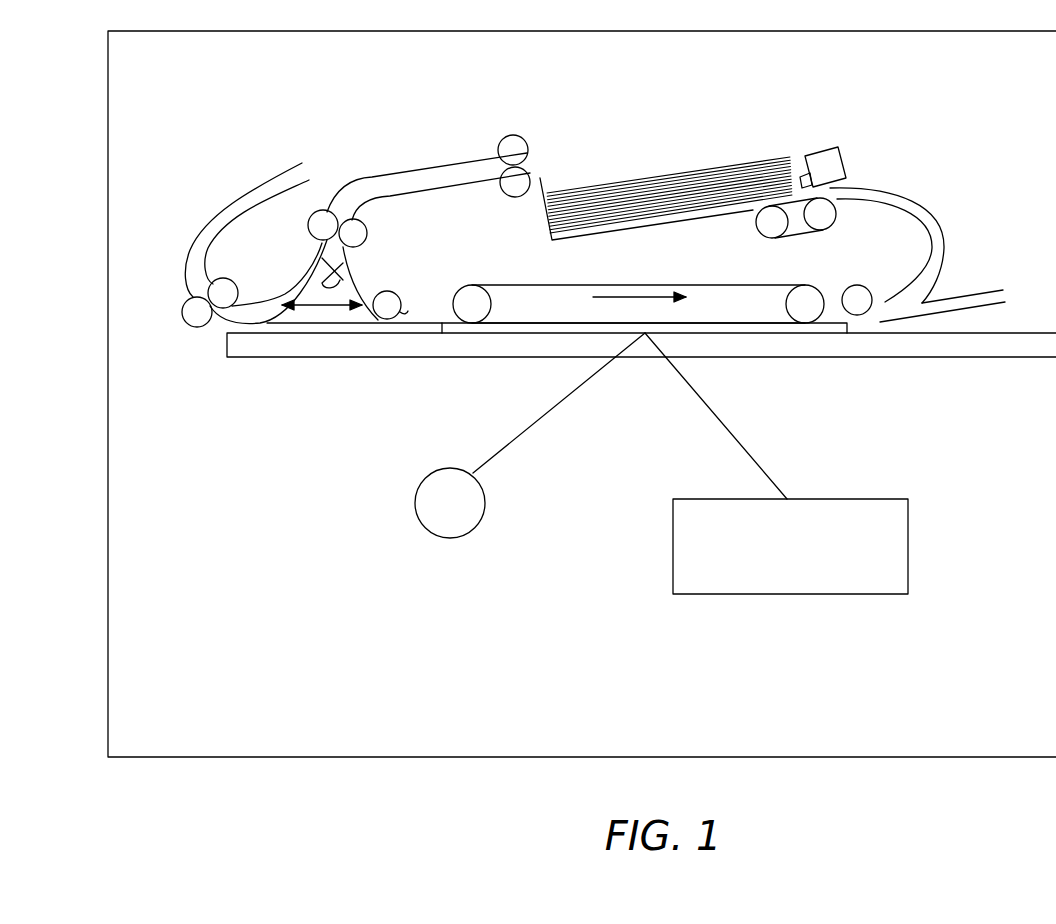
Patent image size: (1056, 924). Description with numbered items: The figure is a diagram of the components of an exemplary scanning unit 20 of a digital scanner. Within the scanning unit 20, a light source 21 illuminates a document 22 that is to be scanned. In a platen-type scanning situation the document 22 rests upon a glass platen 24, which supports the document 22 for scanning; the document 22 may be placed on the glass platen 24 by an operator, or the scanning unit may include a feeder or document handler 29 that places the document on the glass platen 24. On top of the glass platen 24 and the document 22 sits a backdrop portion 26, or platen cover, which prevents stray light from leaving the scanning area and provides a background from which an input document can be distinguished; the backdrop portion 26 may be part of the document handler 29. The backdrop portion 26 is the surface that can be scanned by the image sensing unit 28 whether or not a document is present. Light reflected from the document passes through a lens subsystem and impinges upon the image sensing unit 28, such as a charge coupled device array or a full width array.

The scanning unit 20 is at (483, 758).
The light source 21 is at (450, 542).
The document 22 is at (550, 330).
The glass platen 24 is at (388, 358).
The backdrop portion 26 is at (733, 323).
The image sensing unit 28 is at (843, 498).
The document handler 29 is at (838, 135).